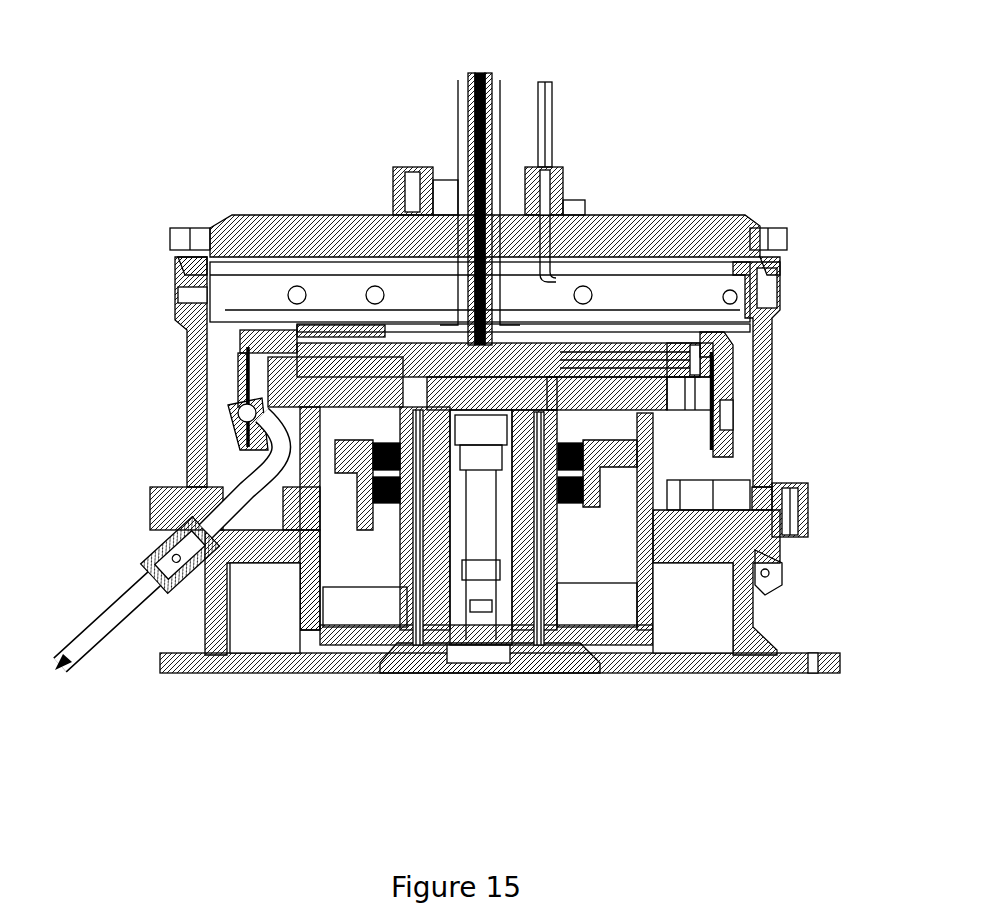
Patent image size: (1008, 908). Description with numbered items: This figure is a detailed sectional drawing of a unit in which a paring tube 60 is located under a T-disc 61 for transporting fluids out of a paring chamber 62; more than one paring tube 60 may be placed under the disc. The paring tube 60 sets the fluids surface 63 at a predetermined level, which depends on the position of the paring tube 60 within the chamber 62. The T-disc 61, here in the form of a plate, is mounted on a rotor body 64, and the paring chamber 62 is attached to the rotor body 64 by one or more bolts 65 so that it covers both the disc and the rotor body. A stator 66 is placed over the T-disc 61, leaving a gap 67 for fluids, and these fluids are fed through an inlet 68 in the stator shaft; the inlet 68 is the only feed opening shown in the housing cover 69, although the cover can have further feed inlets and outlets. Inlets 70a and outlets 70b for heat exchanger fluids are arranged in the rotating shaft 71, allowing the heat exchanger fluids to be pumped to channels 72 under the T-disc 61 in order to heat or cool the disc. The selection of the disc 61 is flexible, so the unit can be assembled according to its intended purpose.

The paring tube 60 is at (135, 608).
The T-disc 61 is at (563, 354).
The paring chamber 62 is at (716, 418).
The fluids surface 63 is at (236, 414).
The rotor body 64 is at (330, 388).
The bolts 65 is at (689, 366).
The stator 66 is at (581, 327).
The gap 67 is at (423, 344).
The inlet 68 is at (473, 136).
The housing cover 69 is at (619, 238).
The inlets 70a is at (484, 676).
The outlets 70b is at (533, 628).
The rotating shaft 71 is at (432, 512).
The channels 72 is at (618, 366).